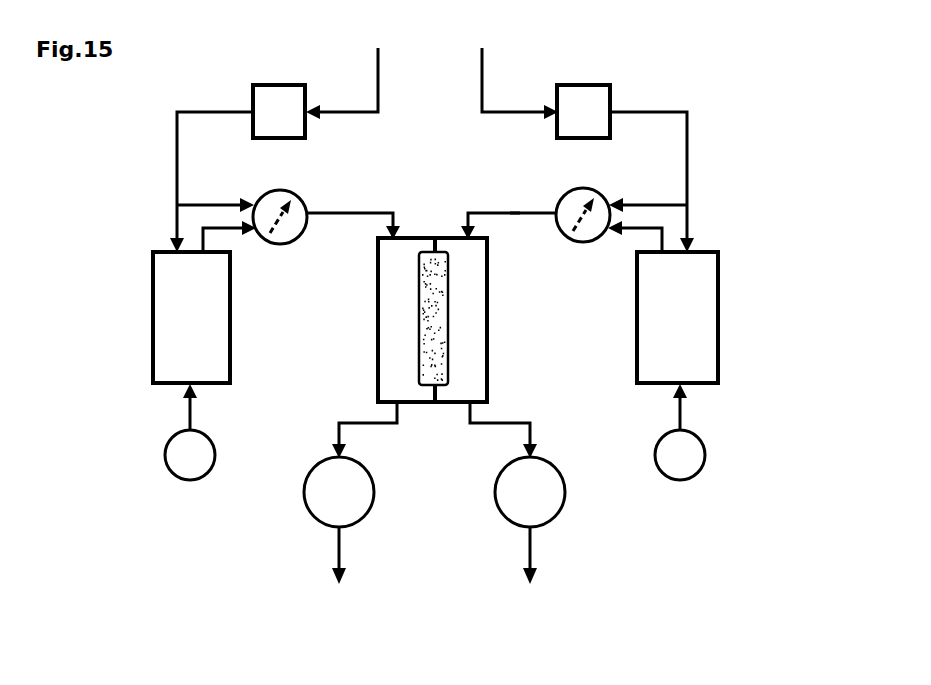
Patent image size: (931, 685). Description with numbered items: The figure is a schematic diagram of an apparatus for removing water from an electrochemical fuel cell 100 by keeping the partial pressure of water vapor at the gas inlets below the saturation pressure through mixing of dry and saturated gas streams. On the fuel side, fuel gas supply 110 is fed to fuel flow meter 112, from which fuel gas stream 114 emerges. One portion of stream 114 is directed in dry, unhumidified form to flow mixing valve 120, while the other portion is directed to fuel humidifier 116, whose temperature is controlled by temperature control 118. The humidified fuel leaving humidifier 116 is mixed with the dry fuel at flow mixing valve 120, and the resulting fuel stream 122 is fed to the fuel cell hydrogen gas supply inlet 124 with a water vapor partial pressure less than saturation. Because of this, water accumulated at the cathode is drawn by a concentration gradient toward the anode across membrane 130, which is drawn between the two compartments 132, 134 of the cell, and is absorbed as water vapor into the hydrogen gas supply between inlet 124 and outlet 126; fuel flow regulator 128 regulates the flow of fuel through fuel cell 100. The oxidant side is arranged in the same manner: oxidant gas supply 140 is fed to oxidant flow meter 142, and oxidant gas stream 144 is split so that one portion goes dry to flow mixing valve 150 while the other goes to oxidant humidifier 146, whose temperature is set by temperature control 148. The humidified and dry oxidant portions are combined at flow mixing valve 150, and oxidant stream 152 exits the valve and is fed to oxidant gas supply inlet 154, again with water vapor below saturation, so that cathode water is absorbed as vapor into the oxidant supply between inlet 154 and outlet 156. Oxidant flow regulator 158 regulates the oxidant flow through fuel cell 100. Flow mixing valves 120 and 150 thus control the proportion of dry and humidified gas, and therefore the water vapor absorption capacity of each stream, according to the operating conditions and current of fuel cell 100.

The fuel cell 100 is at (420, 264).
The fuel gas supply 110 is at (378, 48).
The fuel flow meter 112 is at (275, 98).
The fuel gas stream 114 is at (177, 140).
The fuel humidifier 116 is at (168, 322).
The temperature control 118 is at (176, 460).
The flow mixing valve 120 is at (258, 203).
The fuel stream 122 is at (357, 211).
The hydrogen gas supply inlet 124 is at (398, 234).
The outlet 126 is at (392, 412).
The fuel flow regulator 128 is at (312, 505).
The membrane 130 is at (437, 250).
The anode compartment 132 is at (395, 306).
The cathode compartment 134 is at (468, 352).
The oxidant gas supply 140 is at (482, 48).
The oxidant flow meter 142 is at (587, 98).
The oxidant gas stream 144 is at (687, 124).
The oxidant humidifier 146 is at (695, 295).
The temperature control 148 is at (688, 462).
The flow mixing valve 150 is at (592, 193).
The oxidant stream 152 is at (518, 211).
The oxidant gas supply inlet 154 is at (474, 234).
The outlet 156 is at (478, 412).
The oxidant flow regulator 158 is at (545, 510).